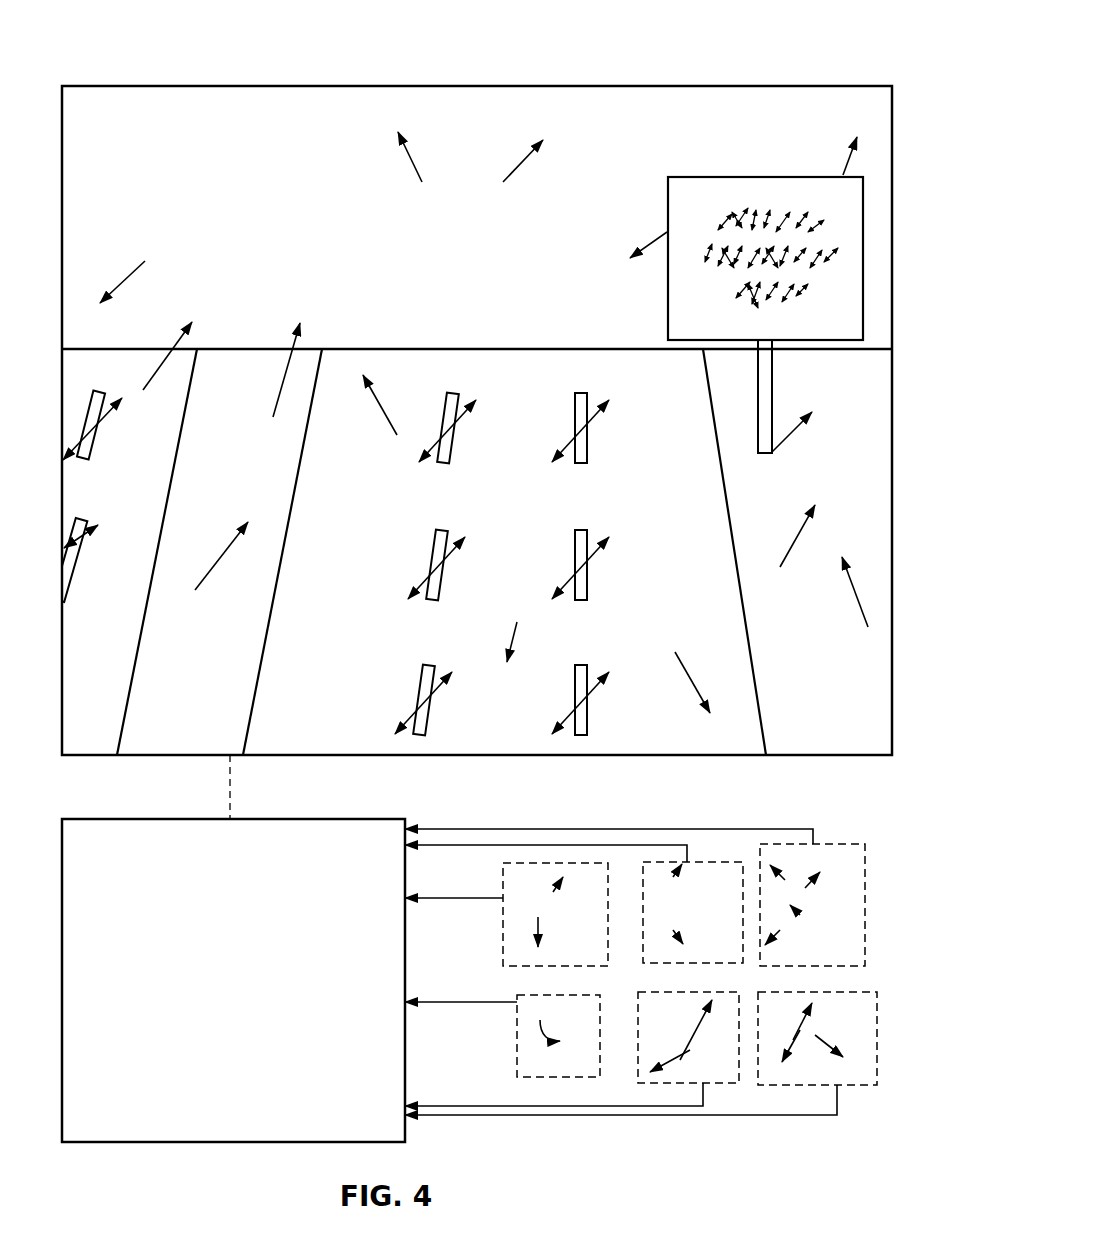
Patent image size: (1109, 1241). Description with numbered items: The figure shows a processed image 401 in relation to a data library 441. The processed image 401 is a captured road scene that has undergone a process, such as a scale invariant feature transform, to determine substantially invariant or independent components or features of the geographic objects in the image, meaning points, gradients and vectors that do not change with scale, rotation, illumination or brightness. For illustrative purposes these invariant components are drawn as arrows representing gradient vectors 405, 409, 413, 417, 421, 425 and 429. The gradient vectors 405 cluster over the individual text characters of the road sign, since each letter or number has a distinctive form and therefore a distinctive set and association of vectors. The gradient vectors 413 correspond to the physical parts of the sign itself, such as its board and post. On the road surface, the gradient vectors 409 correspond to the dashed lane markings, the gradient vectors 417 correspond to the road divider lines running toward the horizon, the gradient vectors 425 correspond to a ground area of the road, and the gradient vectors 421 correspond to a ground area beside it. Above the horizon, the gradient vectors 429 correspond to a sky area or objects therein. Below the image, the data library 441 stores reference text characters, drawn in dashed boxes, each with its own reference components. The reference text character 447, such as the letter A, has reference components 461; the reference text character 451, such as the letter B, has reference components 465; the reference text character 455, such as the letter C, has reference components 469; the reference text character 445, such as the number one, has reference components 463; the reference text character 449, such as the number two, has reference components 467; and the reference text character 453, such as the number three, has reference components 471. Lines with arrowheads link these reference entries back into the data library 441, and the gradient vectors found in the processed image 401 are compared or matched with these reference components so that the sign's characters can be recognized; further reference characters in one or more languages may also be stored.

The processed image 401 is at (720, 86).
The gradient vectors 405 is at (746, 210).
The gradient vectors 409 is at (592, 403).
The gradient vectors 413 is at (650, 245).
The gradient vectors 417 is at (295, 345).
The gradient vectors 421 is at (780, 547).
The gradient vectors 425 is at (372, 405).
The gradient vectors 429 is at (410, 158).
The data library 441 is at (368, 819).
The reference text character 445 is at (517, 1008).
The reference text character 447 is at (503, 903).
The reference text character 449 is at (690, 1083).
The reference text character 451 is at (683, 963).
The reference text character 453 is at (877, 1060).
The reference text character 455 is at (865, 910).
The reference components 461 is at (540, 947).
The reference components 463 is at (543, 1019).
The reference components 465 is at (683, 866).
The reference components 467 is at (677, 1065).
The reference components 469 is at (772, 868).
The reference components 471 is at (843, 1052).